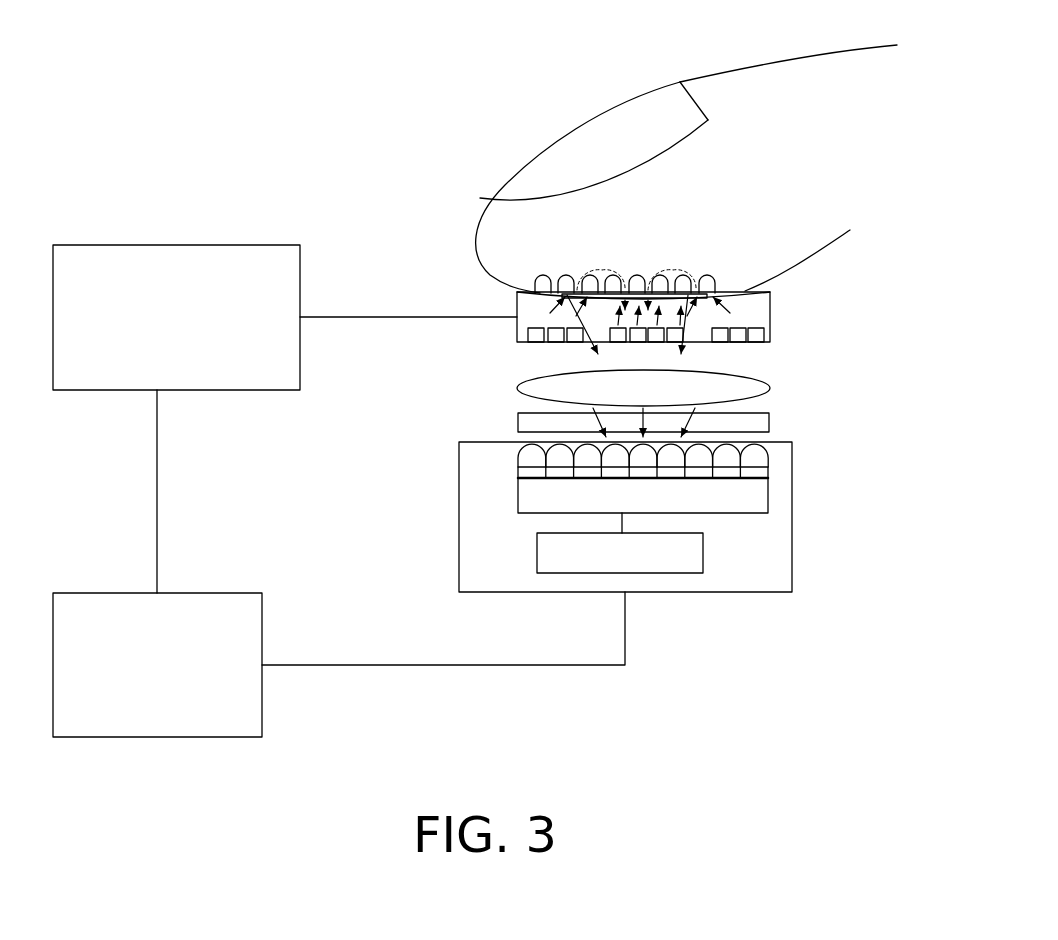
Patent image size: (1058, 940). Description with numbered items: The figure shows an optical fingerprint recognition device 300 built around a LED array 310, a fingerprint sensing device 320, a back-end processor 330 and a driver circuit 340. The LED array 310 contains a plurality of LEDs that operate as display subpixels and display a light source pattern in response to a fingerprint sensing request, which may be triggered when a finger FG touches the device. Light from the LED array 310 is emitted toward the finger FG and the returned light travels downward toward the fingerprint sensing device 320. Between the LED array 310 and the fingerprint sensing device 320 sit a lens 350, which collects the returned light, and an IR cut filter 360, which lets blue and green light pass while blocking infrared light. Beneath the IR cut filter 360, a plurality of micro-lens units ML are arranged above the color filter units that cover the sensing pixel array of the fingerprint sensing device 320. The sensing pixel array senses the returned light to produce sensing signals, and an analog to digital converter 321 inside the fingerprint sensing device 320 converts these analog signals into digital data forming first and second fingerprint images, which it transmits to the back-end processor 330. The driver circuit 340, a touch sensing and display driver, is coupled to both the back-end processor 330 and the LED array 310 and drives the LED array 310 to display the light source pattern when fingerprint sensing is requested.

The optical fingerprint recognition device 300 is at (908, 783).
The finger FG is at (780, 77).
The LED array 310 is at (770, 312).
The lens 350 is at (770, 388).
The IR cut filter 360 is at (770, 422).
The fingerprint sensing device 320 is at (653, 551).
The micro-lens units ML is at (522, 456).
The analog to digital converter 321 is at (683, 573).
The back-end processor 330 is at (237, 593).
The driver circuit 340 is at (237, 245).